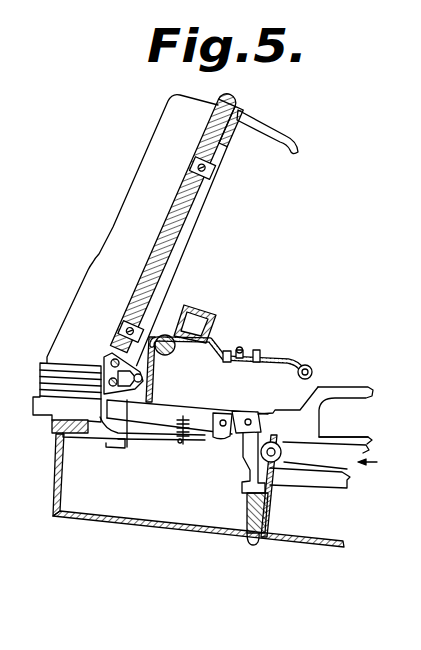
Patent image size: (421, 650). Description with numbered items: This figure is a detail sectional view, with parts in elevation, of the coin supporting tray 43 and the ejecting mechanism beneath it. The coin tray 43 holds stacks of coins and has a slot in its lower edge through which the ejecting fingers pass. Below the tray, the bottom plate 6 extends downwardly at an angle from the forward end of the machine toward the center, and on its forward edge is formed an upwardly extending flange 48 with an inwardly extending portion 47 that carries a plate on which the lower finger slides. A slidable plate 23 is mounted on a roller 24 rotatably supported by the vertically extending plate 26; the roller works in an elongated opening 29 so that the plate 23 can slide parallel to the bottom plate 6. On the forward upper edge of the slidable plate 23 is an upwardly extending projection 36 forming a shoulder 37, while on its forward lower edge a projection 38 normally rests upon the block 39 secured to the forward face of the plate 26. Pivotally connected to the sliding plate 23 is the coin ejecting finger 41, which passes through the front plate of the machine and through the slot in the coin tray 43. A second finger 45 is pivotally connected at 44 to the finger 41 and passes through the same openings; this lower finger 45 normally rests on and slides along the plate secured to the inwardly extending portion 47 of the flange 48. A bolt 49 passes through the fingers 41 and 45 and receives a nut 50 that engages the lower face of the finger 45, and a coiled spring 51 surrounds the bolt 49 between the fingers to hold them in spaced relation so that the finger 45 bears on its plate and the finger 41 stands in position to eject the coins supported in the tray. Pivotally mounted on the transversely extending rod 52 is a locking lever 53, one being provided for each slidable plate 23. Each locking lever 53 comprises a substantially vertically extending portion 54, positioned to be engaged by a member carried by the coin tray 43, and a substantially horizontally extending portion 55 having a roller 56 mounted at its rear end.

The bottom plate 6 is at (155, 526).
The slidable plate 23 is at (357, 438).
The roller 24 is at (283, 453).
The vertically extending plate 26 is at (273, 519).
The elongated opening 29 is at (348, 481).
The upwardly extending projection 36 is at (370, 384).
The shoulder 37 is at (297, 410).
The projection 38 is at (250, 485).
The block 39 is at (247, 513).
The coin ejecting finger 41 is at (165, 403).
The coin tray 43 is at (172, 228).
The pivot 44 is at (240, 412).
The second finger 45 is at (149, 438).
The inwardly extending portion 47 is at (85, 443).
The upwardly extending flange 48 is at (58, 468).
The bolt 49 is at (193, 403).
The nut 50 is at (184, 446).
The coiled spring 51 is at (205, 433).
The transversely extending rod 52 is at (170, 332).
The locking lever 53 is at (195, 324).
The vertically extending portion 54 is at (154, 380).
The horizontally extending portion 55 is at (213, 340).
The roller 56 is at (311, 369).